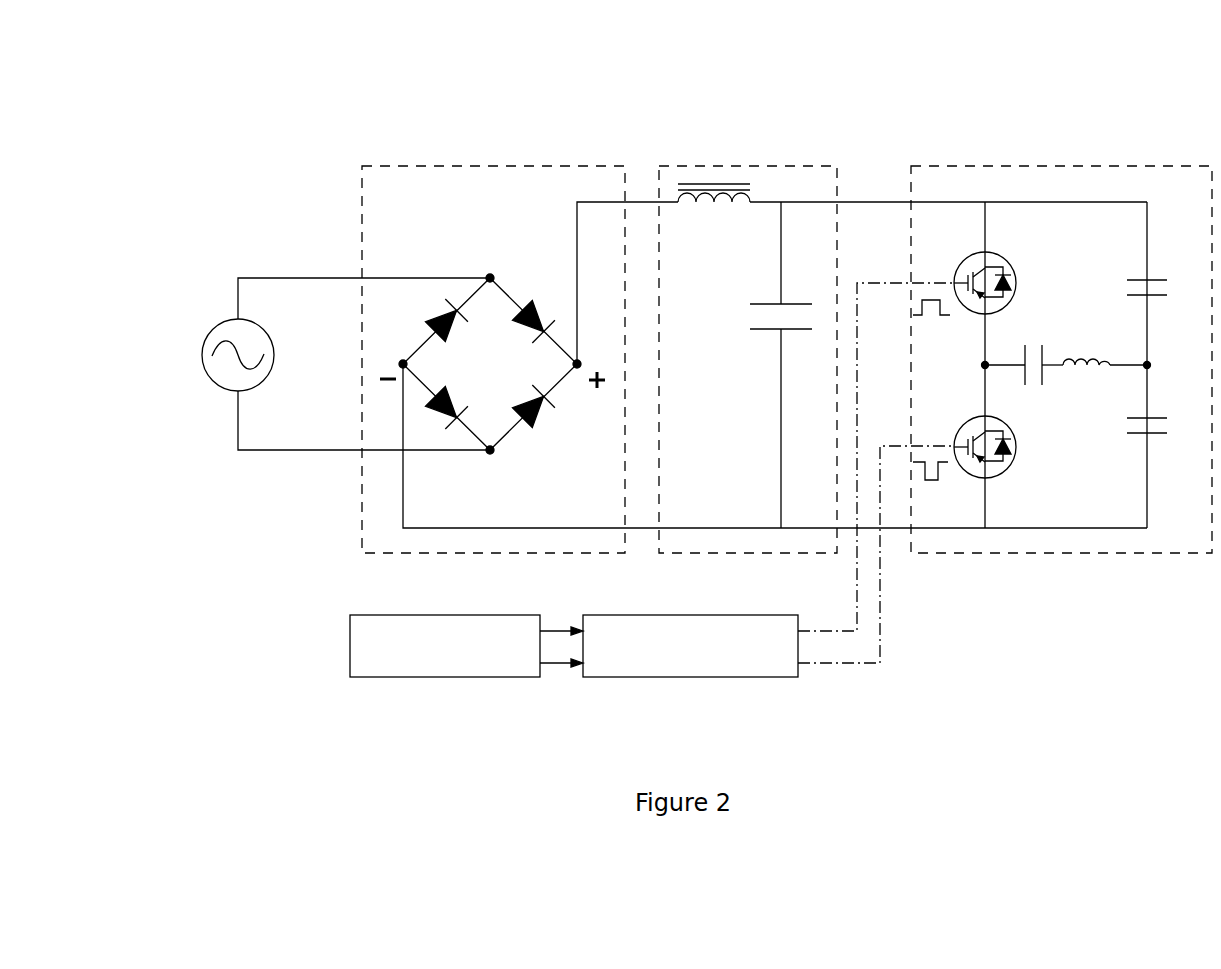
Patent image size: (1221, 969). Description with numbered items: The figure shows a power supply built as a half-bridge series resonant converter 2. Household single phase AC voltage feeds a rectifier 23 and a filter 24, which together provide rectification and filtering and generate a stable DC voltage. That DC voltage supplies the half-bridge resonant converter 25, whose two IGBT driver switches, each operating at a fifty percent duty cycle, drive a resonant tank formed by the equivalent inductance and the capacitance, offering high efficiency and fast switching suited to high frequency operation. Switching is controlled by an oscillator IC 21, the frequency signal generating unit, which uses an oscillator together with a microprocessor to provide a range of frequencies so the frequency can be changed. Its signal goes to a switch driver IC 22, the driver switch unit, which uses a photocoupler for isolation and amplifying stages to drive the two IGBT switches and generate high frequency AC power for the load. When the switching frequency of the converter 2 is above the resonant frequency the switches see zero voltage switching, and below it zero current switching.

The half-bridge series resonant converter 2 is at (326, 122).
The oscillator IC 21 is at (445, 646).
The switch driver IC 22 is at (747, 480).
The rectifier 23 is at (520, 326).
The filter 24 is at (785, 323).
The half-bridge resonant converter 25 is at (1061, 325).